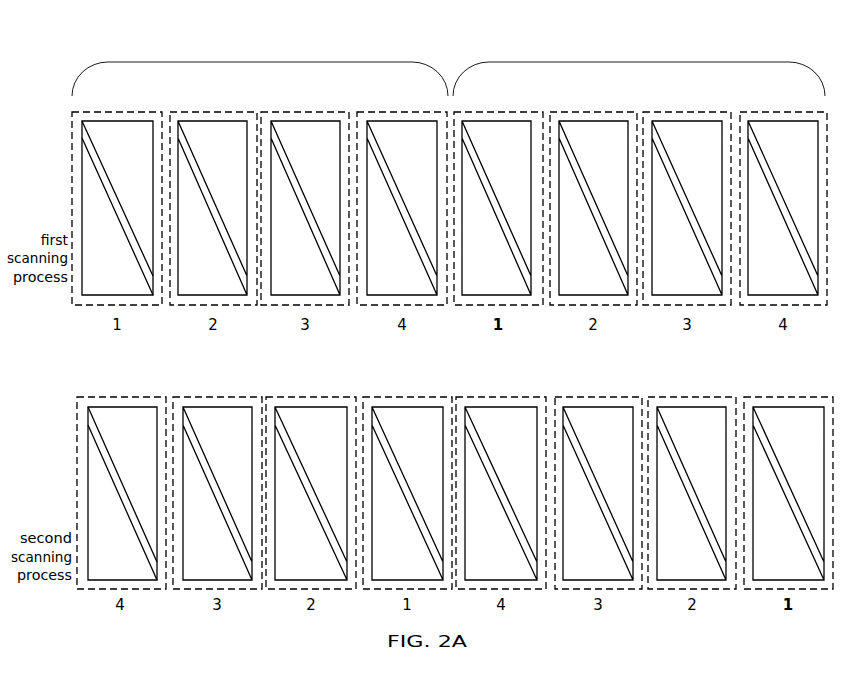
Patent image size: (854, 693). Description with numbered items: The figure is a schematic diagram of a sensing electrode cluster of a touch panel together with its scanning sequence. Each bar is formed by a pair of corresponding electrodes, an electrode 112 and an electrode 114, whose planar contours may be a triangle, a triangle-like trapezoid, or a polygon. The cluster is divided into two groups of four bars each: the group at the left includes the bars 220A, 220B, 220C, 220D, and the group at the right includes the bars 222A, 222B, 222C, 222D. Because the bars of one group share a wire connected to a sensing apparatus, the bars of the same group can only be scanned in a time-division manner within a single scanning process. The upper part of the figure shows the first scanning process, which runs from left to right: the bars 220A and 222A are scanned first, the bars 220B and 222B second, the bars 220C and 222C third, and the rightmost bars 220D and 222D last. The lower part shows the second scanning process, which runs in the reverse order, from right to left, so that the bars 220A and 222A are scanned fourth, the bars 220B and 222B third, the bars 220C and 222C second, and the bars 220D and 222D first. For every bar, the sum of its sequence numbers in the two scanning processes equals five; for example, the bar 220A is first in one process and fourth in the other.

The electrode 112 is at (85, 125).
The electrode 114 is at (82, 167).
The bar 220A is at (93, 334).
The bar 220B is at (196, 112).
The bar 220C is at (287, 112).
The bar 220D is at (383, 112).
The bar 222A is at (480, 112).
The bar 222B is at (576, 112).
The bar 222C is at (669, 112).
The bar 222D is at (766, 112).